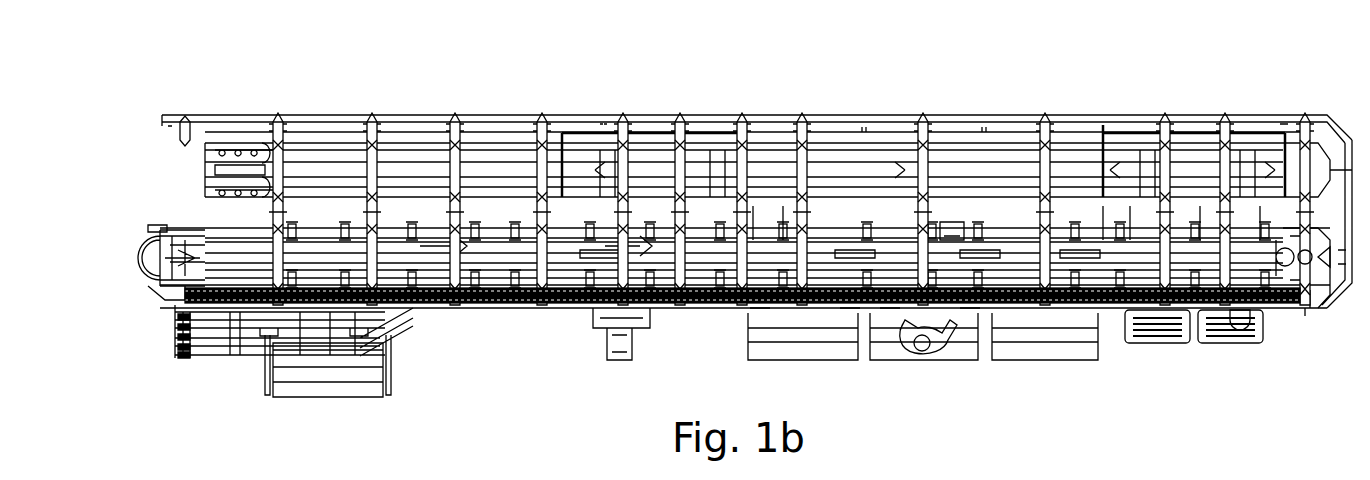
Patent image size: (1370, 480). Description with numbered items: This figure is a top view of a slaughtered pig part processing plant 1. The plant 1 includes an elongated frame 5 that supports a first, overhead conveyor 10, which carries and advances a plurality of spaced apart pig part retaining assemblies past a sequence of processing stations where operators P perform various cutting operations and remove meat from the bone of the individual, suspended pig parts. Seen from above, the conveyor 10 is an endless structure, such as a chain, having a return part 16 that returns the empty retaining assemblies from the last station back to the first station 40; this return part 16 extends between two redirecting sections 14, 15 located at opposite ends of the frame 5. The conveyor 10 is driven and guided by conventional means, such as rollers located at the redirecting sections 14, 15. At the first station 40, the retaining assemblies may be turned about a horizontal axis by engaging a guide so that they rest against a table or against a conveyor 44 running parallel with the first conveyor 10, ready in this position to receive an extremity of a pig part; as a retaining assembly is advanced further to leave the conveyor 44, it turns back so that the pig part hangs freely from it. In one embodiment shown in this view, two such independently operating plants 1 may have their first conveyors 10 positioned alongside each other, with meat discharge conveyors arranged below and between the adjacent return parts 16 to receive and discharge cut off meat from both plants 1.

The slaughtered pig part processing plant 1 is at (441, 114).
The elongated frame 5 is at (882, 128).
The first conveyor 10 is at (515, 302).
The redirecting section 14 is at (140, 250).
The redirecting section 15 is at (1312, 268).
The return part 16 is at (952, 233).
The first station 40 is at (395, 367).
The conveyor 44 is at (333, 372).
The operators P is at (925, 355).